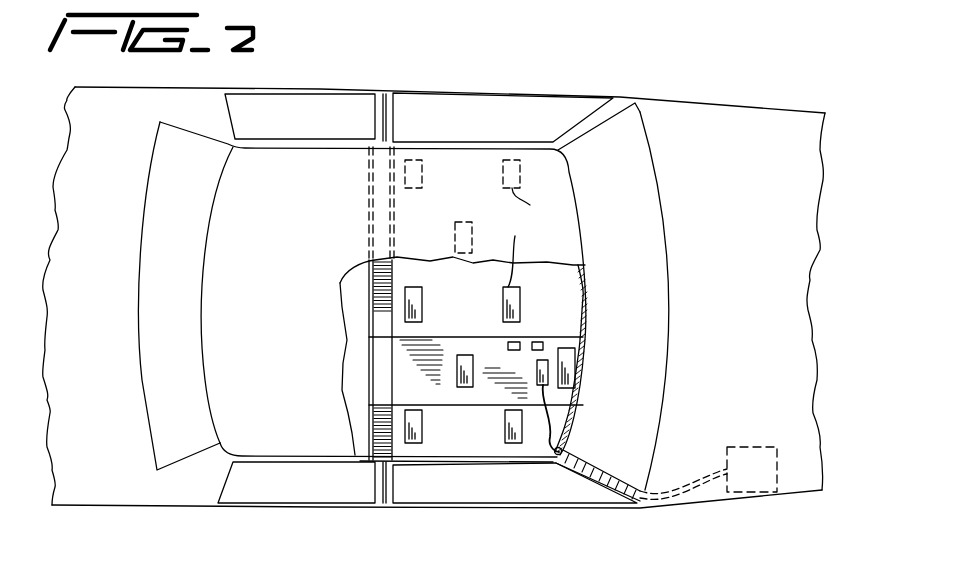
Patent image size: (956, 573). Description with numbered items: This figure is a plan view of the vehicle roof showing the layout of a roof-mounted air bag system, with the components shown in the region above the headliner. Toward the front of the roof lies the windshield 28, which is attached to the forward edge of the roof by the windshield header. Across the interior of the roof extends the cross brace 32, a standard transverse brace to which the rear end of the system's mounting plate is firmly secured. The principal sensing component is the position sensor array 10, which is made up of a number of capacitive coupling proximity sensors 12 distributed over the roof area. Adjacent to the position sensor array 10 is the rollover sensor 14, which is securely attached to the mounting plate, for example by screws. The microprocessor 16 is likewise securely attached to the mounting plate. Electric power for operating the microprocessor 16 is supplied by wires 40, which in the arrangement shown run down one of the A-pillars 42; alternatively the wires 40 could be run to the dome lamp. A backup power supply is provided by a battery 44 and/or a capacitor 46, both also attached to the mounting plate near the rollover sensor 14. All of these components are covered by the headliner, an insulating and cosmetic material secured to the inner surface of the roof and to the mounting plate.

The position sensor array 10 is at (557, 208).
The windshield 28 is at (640, 210).
The cross brace 32 is at (376, 305).
The capacitive coupling proximity sensors 12 is at (472, 236).
The battery 44 is at (520, 342).
The capacitor 46 is at (535, 342).
The rollover sensor 14 is at (580, 362).
The microprocessor 16 is at (537, 370).
The A-pillar 42 is at (588, 480).
The wires 40 is at (680, 493).